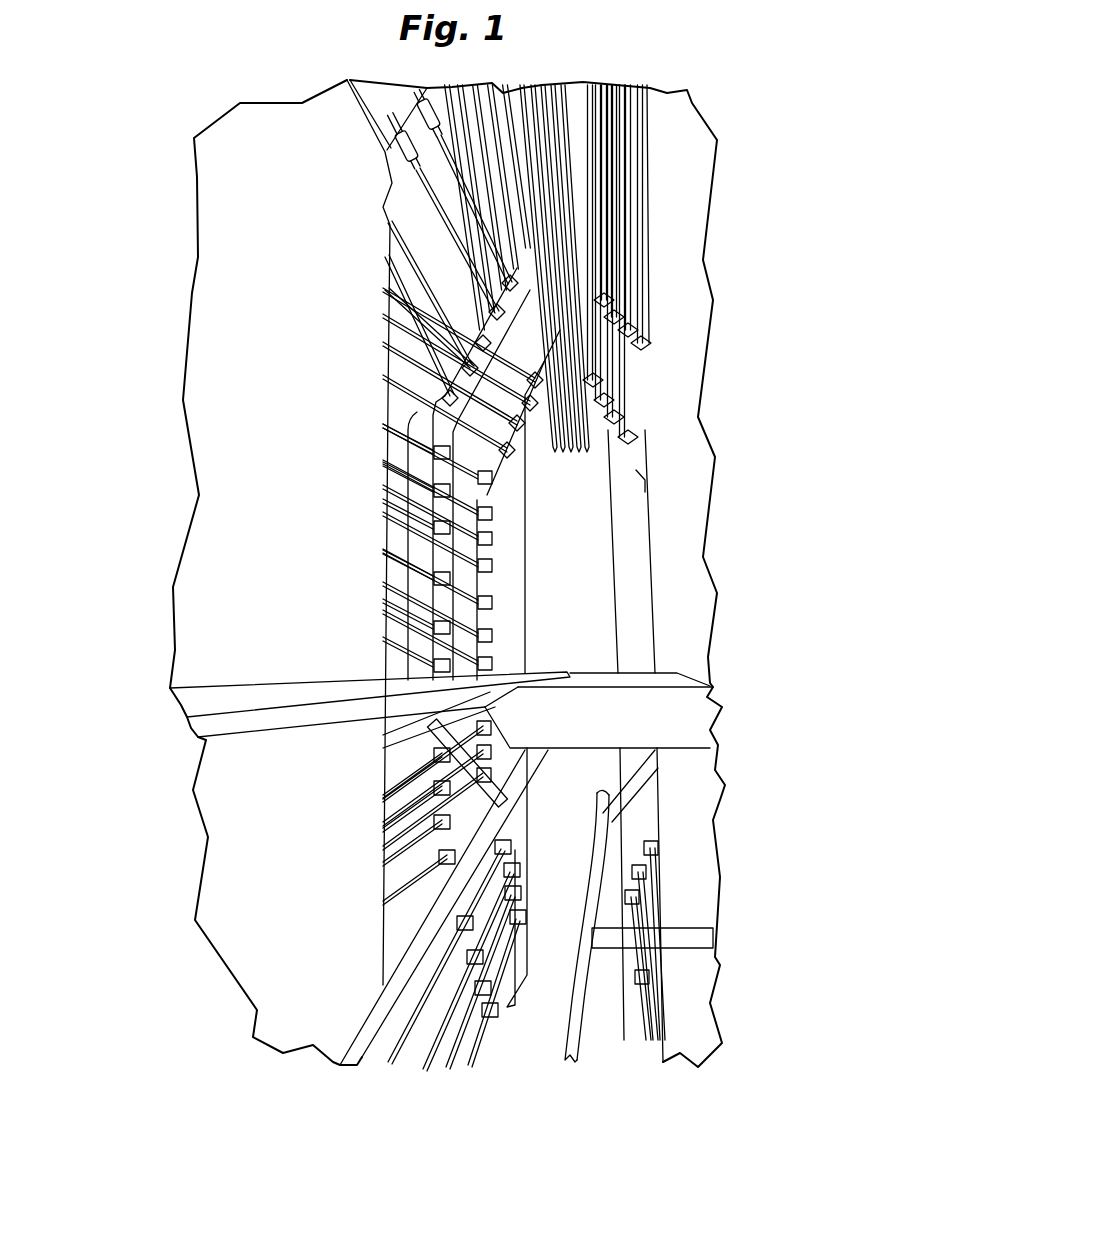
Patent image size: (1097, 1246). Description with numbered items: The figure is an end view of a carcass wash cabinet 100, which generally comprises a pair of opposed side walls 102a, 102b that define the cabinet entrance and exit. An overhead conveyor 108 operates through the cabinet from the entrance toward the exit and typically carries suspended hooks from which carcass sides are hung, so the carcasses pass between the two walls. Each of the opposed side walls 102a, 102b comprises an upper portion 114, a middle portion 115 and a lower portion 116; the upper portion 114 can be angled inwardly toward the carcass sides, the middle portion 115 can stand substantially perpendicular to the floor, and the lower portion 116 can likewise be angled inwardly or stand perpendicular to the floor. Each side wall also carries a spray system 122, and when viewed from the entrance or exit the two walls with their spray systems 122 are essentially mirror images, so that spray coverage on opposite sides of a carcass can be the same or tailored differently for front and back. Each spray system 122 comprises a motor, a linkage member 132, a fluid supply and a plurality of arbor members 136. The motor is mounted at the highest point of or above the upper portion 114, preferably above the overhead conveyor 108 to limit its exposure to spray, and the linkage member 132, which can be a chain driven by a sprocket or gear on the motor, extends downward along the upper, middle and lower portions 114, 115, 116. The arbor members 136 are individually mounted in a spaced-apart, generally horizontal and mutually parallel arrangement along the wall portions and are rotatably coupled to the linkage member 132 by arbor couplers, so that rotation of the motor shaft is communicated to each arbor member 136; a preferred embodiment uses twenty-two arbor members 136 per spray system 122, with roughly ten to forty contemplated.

The carcass wash cabinet 100 is at (710, 47).
The side wall 102a is at (383, 467).
The side wall 102b is at (645, 520).
The overhead conveyor 108 is at (612, 470).
The upper portion 114 is at (433, 125).
The middle portion 115 is at (393, 592).
The lower portion 116 is at (625, 970).
The spray system 122 is at (393, 567).
The linkage member 132 is at (575, 455).
The arbor member 136 is at (410, 243).